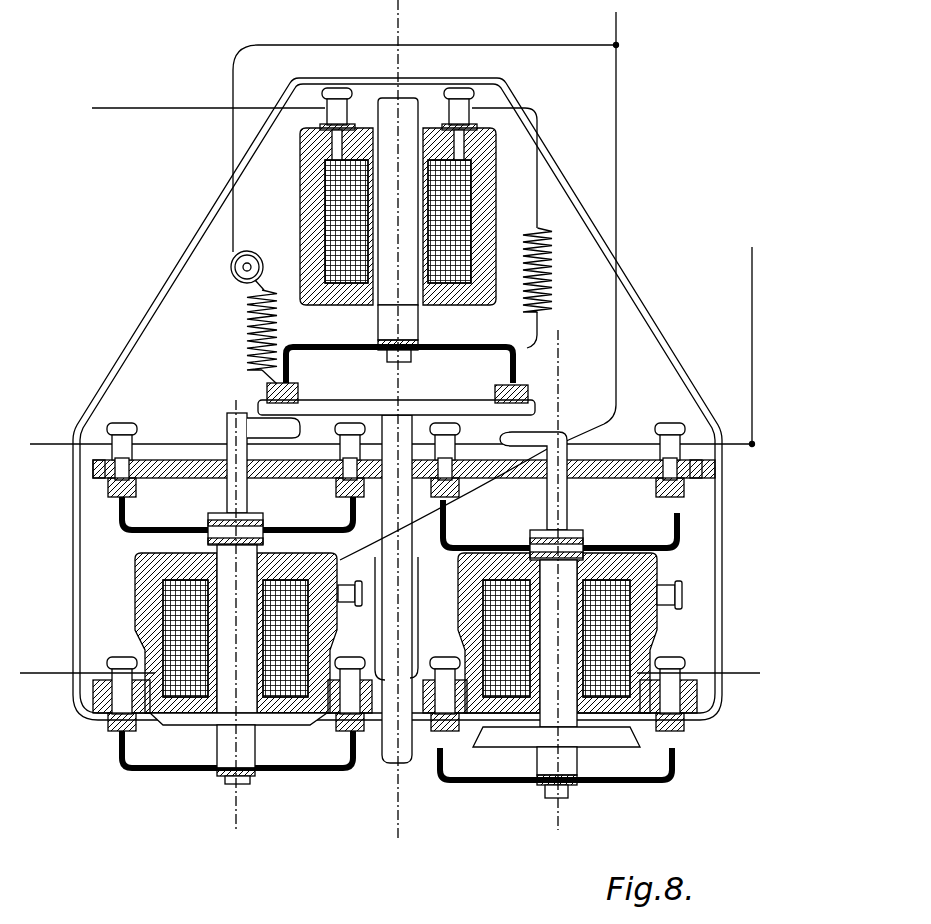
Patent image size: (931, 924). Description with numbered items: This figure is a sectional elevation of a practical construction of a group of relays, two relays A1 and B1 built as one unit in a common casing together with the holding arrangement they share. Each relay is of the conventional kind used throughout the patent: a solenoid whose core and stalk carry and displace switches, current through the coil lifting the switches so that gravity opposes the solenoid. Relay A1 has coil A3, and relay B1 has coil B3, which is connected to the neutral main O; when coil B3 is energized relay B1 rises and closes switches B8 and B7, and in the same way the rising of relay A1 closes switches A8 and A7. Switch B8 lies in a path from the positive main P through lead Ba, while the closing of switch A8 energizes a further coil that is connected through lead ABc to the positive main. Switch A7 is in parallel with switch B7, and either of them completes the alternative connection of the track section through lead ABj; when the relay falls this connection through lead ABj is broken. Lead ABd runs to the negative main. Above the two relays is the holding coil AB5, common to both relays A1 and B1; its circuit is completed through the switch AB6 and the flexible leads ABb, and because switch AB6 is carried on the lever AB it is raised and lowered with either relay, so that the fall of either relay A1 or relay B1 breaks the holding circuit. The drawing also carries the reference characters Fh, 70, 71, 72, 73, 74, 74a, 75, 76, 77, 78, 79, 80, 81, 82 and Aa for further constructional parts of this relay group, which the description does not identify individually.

The positive main P is at (593, 227).
The lead ABc is at (612, 80).
The field conductor Fh is at (208, 98).
The holding coil AB5 is at (470, 193).
The electromagnet frame 71 is at (495, 211).
The plunger 80 is at (398, 430).
The flexible leads ABb is at (400, 246).
The lead ABd is at (752, 303).
The switch AB6 is at (336, 358).
The contact 79 is at (265, 393).
The lever AB is at (420, 403).
The armature lever 78 is at (226, 428).
The housing 70 is at (680, 379).
The lead ABj is at (40, 441).
The insulating plate 73 is at (286, 485).
The bolt 77 is at (118, 505).
The switch A7 is at (150, 532).
The switch B7 is at (482, 545).
The neutral main O is at (685, 580).
The terminal 81 is at (378, 571).
The terminal 82 is at (427, 617).
The coil A3 is at (140, 616).
The core 75 is at (258, 609).
The magnet yoke 72 is at (337, 630).
The coil B3 is at (655, 631).
The armature plate 74 is at (235, 592).
The conductor Aa is at (87, 663).
The lead Ba is at (698, 663).
The bolt 76 is at (120, 736).
The armature disc 74a is at (238, 717).
The switch A8 is at (167, 764).
The switch B8 is at (478, 784).
The relay A1 is at (234, 779).
The relay B1 is at (557, 791).